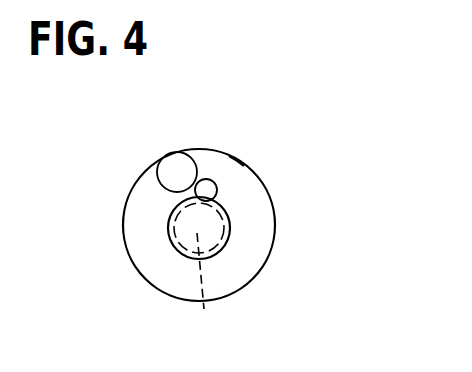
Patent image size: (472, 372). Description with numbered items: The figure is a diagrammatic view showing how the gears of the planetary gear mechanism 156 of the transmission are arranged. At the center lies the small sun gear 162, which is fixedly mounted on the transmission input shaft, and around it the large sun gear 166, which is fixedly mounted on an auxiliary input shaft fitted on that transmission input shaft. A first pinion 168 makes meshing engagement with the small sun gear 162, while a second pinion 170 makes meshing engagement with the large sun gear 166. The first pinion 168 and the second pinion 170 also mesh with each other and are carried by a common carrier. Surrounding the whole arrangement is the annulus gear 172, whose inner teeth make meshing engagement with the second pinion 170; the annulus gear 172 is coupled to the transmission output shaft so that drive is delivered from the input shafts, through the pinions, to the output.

The planetary gear mechanism 156 is at (203, 143).
The small sun gear 162 is at (204, 285).
The large sun gear 166 is at (228, 240).
The first pinion 168 is at (213, 186).
The second pinion 170 is at (170, 166).
The annulus gear 172 is at (229, 156).